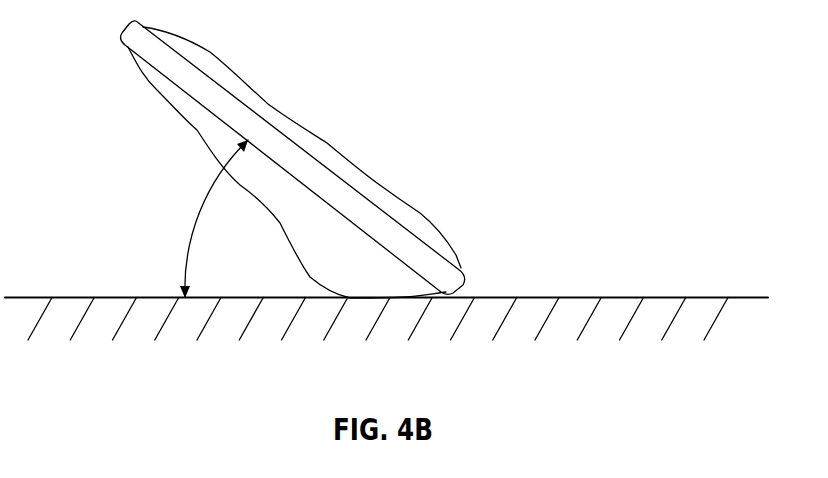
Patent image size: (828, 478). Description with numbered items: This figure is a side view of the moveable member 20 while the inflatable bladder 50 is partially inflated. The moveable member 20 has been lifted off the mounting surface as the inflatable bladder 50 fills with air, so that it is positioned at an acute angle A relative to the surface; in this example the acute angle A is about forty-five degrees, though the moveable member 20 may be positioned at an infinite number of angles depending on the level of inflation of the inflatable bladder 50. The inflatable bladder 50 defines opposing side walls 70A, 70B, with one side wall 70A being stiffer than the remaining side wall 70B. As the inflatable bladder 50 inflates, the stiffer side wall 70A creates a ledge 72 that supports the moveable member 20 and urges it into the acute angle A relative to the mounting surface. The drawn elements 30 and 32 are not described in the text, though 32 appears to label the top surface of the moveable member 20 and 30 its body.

The moveable member 20 is at (322, 191).
The board 30 is at (293, 151).
The top surface of board 32 is at (139, 29).
The inflatable bladder 50 is at (325, 201).
The side wall 70A is at (410, 302).
The side wall 70B is at (415, 210).
The ledge 72 is at (327, 300).
The acute angle A is at (200, 207).